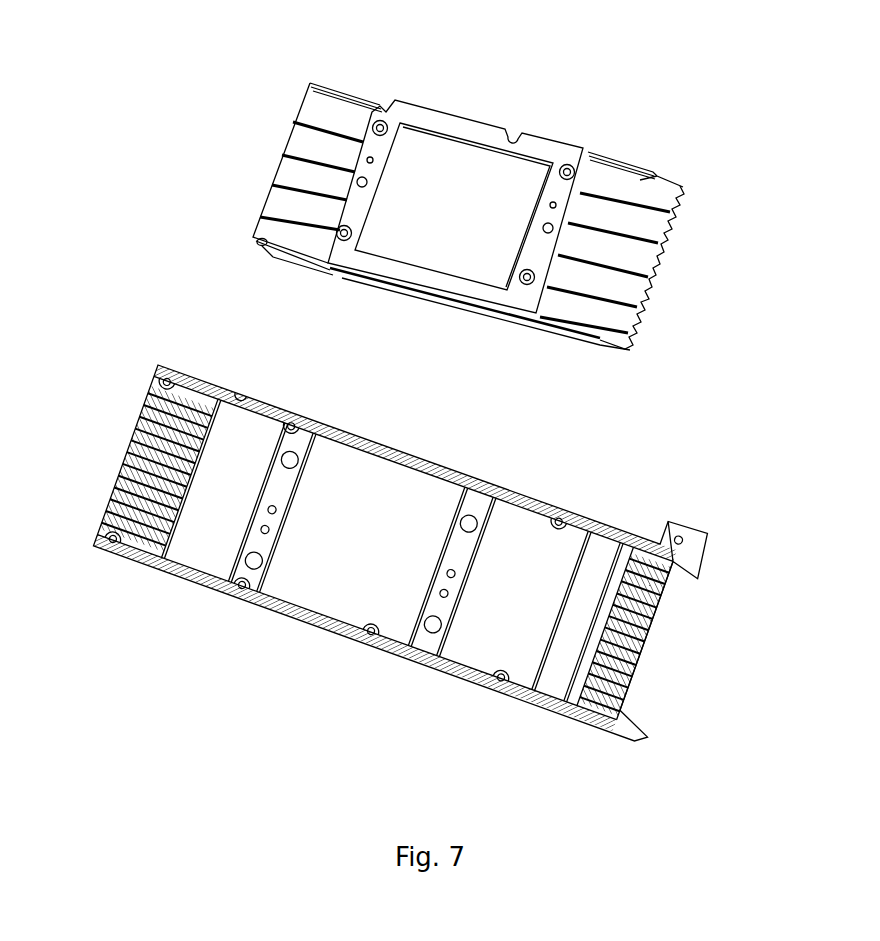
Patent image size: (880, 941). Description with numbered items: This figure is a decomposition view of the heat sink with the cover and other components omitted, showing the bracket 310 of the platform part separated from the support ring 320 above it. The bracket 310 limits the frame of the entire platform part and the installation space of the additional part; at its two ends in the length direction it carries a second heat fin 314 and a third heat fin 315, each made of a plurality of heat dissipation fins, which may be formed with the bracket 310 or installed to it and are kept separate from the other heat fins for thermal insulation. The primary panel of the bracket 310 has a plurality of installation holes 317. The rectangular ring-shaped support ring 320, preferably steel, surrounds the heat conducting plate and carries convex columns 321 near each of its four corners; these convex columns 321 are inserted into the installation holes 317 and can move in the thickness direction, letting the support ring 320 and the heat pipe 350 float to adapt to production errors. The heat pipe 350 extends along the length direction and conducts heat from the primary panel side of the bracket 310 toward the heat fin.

The bracket 310 is at (399, 573).
The second heat fin 314 is at (132, 560).
The third heat fin 315 is at (592, 725).
The installation holes 317 is at (428, 630).
The support ring 320 is at (470, 125).
The convex columns 321 is at (567, 170).
The heat pipe 350 is at (633, 190).